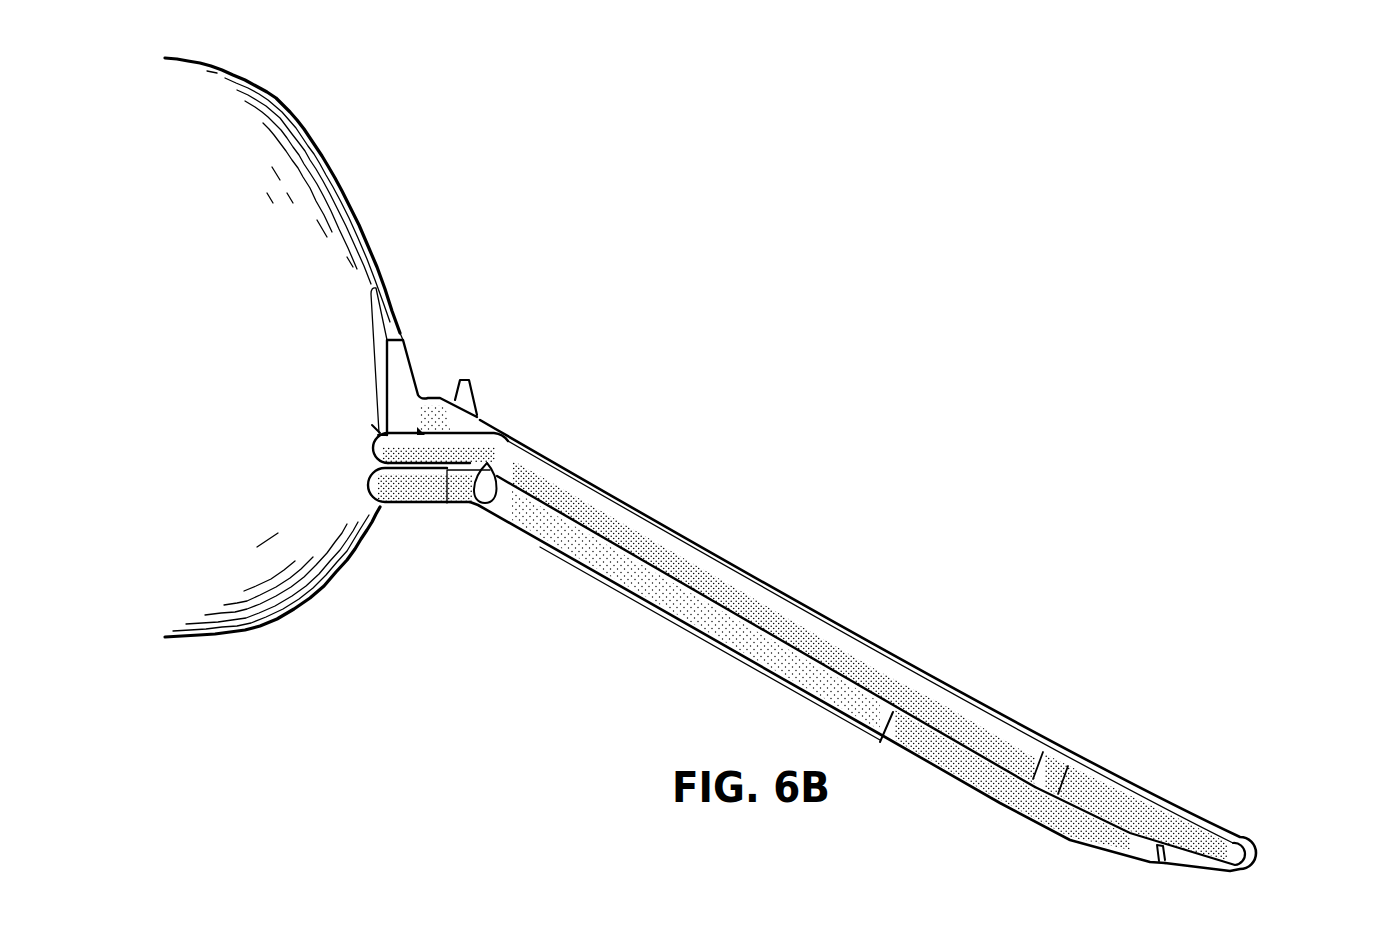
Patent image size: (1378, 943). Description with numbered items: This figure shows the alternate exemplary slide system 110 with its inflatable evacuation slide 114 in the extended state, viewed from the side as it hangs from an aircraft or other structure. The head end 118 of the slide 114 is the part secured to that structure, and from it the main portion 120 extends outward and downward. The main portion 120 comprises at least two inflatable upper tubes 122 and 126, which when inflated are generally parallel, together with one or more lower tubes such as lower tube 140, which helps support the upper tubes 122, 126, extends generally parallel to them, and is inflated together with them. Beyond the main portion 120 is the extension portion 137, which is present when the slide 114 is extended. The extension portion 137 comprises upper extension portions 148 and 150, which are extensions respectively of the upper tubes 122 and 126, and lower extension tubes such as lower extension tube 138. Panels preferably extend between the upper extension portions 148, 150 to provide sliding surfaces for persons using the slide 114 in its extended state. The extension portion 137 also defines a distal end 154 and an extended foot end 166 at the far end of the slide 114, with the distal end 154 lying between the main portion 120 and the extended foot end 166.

The slide system 110 is at (613, 343).
The inflatable evacuation slide 114 is at (828, 388).
The head end 118 is at (390, 548).
The main portion 120 is at (906, 578).
The upper tube 122 is at (677, 567).
The upper tube 126 is at (790, 599).
The extension portion 137 is at (1121, 667).
The lower extension tube 138 is at (1002, 788).
The lower tube 140 is at (630, 578).
The upper extension portion 148 is at (1057, 783).
The upper extension portion 150 is at (1179, 811).
The distal end 154 is at (1047, 706).
The extended foot end 166 is at (1271, 821).